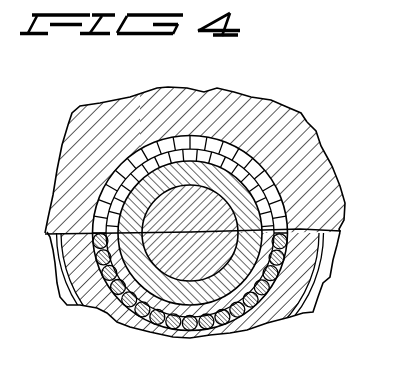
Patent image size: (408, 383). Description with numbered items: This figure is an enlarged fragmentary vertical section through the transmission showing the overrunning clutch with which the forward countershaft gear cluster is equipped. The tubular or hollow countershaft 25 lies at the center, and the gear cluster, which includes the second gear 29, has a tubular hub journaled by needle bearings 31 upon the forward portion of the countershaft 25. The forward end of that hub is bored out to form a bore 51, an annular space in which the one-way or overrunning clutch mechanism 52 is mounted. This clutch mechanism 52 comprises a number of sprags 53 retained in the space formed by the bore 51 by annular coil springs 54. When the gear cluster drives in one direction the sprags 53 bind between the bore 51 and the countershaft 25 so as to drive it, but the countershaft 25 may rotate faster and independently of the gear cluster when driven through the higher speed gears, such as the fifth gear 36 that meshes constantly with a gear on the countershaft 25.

The countershaft 25 is at (255, 264).
The second gear 29 is at (315, 119).
The needle bearings 31 is at (323, 297).
The fifth gear 36 is at (400, 291).
The bore 51 is at (290, 190).
The overrunning clutch mechanism 52 is at (285, 104).
The sprags 53 is at (238, 141).
The annular coil springs 54 is at (304, 148).